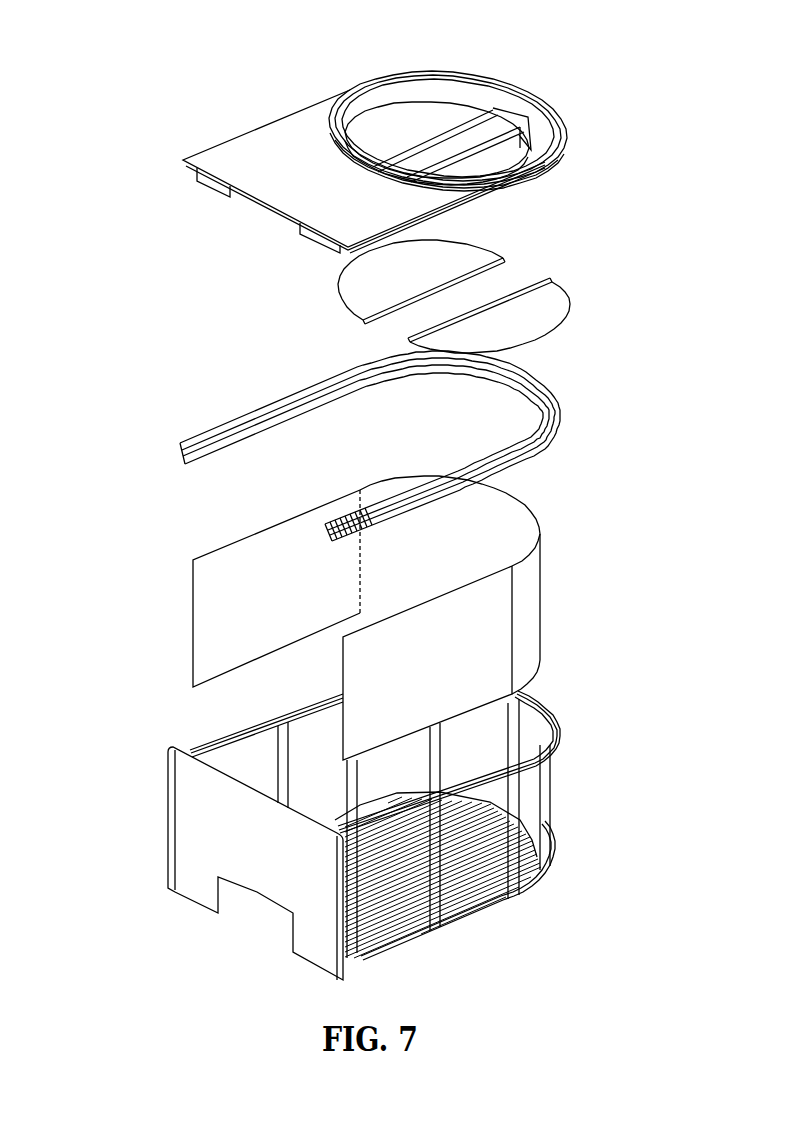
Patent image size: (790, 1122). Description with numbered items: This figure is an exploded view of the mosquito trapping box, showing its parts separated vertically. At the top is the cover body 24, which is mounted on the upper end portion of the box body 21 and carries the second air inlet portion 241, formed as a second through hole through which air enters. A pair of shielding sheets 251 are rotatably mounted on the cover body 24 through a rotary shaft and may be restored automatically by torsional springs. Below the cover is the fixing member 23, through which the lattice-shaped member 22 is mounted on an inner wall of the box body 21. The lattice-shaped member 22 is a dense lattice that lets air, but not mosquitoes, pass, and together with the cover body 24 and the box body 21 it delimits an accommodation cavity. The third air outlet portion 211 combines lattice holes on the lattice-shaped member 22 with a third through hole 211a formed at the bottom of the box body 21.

The cover body 24 is at (264, 125).
The second air inlet portion 241 is at (428, 127).
The shielding sheets 251 is at (565, 310).
The fixing member 23 is at (561, 419).
The lattice-shaped member 22 is at (533, 576).
The box body 21 is at (180, 812).
The third air outlet portion 211 is at (523, 657).
The third through hole 211a is at (467, 903).